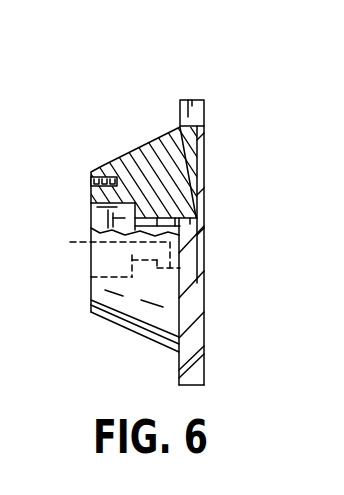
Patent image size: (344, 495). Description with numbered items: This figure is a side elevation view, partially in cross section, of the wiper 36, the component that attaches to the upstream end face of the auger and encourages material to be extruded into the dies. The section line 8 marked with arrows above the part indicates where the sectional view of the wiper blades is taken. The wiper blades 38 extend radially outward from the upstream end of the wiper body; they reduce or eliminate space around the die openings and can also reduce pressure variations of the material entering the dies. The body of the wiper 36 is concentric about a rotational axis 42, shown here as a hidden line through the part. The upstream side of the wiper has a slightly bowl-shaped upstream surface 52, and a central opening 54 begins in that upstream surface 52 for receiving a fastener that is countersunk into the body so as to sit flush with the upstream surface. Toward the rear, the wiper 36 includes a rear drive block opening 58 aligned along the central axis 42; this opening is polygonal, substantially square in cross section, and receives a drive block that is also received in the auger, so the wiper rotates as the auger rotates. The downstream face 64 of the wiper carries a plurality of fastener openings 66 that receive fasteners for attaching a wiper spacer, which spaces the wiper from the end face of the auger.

The section line 8- 8 is at (179, 109).
The wiper 36 is at (84, 150).
The wiper blades 38 is at (189, 90).
The rotational axis 42 is at (70, 243).
The upstream surface 52 is at (197, 210).
The central opening 54 is at (170, 217).
The rear drive block opening 58 is at (90, 228).
The downstream face 64 is at (88, 299).
The fastener openings 66 is at (91, 181).